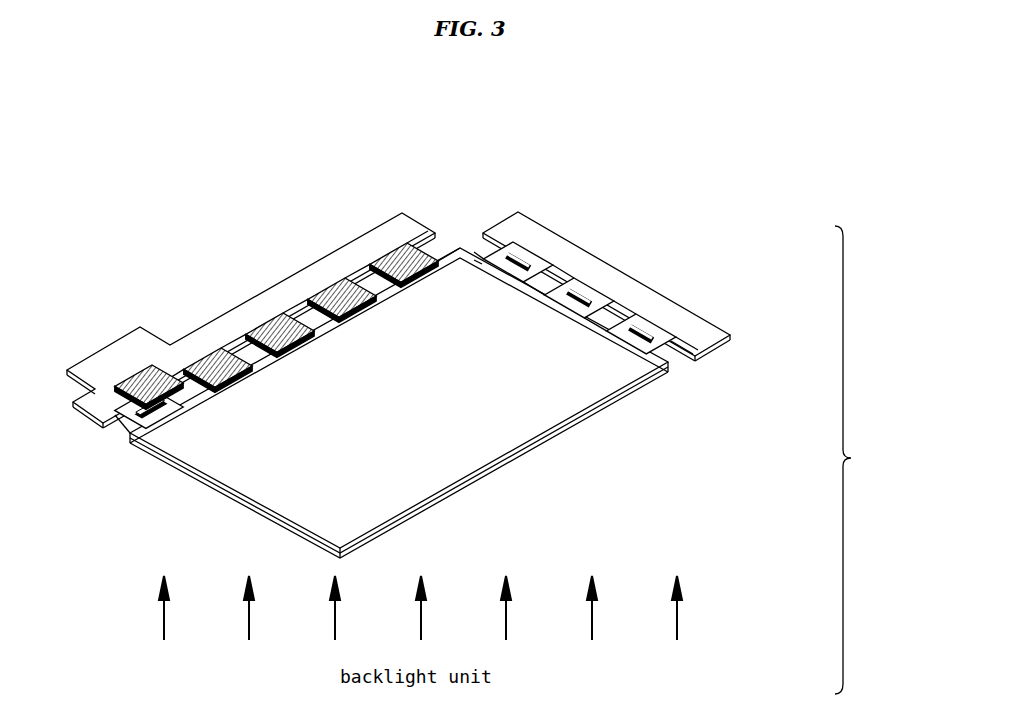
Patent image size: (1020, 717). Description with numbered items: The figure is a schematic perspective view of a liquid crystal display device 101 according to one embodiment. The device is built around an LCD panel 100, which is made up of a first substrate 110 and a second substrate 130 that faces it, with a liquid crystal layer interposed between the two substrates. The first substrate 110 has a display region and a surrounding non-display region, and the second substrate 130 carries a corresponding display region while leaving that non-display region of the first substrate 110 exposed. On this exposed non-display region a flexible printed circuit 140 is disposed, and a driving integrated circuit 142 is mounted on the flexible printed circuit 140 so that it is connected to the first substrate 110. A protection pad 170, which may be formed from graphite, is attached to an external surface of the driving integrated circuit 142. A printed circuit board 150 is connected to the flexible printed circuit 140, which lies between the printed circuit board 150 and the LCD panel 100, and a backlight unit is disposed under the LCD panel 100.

The LCD panel 100 is at (690, 374).
The liquid crystal display device 101 is at (873, 460).
The first substrate 110 is at (590, 420).
The second substrate 130 is at (632, 388).
The flexible printed circuit 140 is at (133, 422).
The driving integrated circuit 142 is at (175, 418).
The printed circuit board 150 is at (232, 322).
The protection pad 170 is at (135, 373).